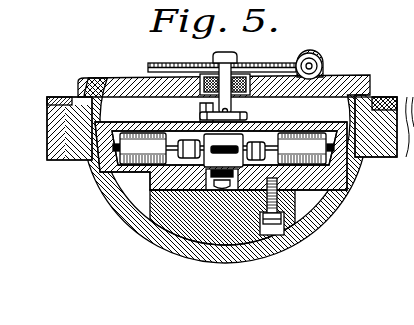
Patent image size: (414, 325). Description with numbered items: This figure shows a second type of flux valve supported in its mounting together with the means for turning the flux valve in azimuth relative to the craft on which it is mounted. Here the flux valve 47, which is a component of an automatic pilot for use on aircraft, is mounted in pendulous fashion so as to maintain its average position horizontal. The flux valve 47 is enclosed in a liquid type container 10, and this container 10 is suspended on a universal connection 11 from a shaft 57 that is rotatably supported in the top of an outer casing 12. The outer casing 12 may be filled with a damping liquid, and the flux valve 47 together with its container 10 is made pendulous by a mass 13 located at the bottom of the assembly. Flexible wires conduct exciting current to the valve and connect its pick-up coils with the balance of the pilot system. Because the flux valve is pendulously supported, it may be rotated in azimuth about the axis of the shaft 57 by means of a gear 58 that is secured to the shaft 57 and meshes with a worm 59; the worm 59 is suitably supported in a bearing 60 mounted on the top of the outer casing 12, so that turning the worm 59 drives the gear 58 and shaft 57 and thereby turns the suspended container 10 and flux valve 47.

The liquid type container 10 is at (110, 125).
The universal connection 11 is at (212, 107).
The outer casing 12 is at (93, 79).
The mass 13 is at (186, 238).
The flux valve 47 is at (153, 178).
The shaft 57 is at (238, 101).
The gear 58 is at (276, 63).
The worm 59 is at (322, 58).
The bearing 60 is at (330, 74).